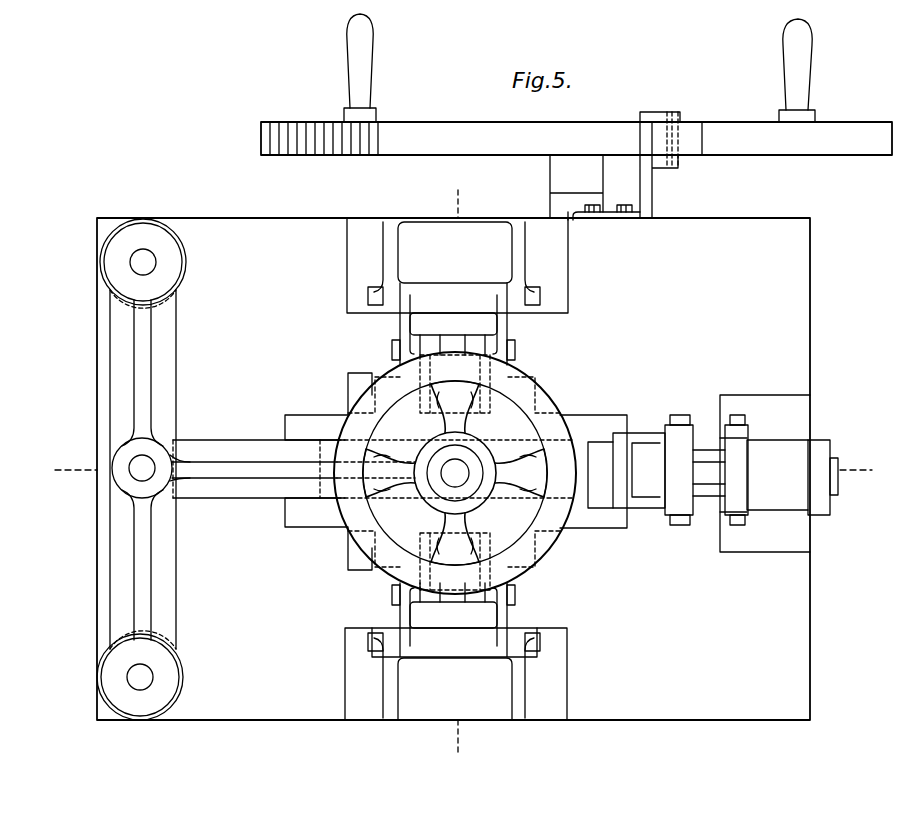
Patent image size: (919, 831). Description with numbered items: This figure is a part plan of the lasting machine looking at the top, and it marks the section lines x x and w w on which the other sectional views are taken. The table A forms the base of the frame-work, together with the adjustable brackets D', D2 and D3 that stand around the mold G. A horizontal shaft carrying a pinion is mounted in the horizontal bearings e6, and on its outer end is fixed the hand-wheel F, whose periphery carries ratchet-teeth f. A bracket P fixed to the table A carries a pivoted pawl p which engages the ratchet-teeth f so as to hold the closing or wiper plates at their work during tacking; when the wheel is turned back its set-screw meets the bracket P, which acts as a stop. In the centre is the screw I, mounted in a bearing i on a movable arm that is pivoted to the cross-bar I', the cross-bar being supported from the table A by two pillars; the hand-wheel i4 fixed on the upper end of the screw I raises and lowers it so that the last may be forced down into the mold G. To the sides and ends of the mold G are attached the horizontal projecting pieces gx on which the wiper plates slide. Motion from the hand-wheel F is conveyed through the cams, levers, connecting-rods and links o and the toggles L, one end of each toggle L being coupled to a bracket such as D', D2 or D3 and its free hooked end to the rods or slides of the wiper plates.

The table A is at (453, 469).
The hand-wheel F is at (576, 84).
The ratchet-teeth f is at (310, 153).
The bracket P is at (644, 200).
The pivoted pawl p is at (690, 156).
The horizontal bearings e6 is at (570, 208).
The section line w is at (456, 474).
The adjustable bracket D3 is at (457, 265).
The adjustable bracket D' is at (456, 674).
The connecting-rods and links o is at (458, 350).
The toggle L is at (398, 328).
The adjustable bracket D2 is at (779, 473).
The projecting pieces gx is at (620, 550).
The hand-wheel i4 is at (555, 563).
The mold G is at (455, 473).
The screw I is at (455, 473).
The bearing i is at (238, 500).
The cross-bar I' is at (151, 469).
The section line x is at (457, 471).